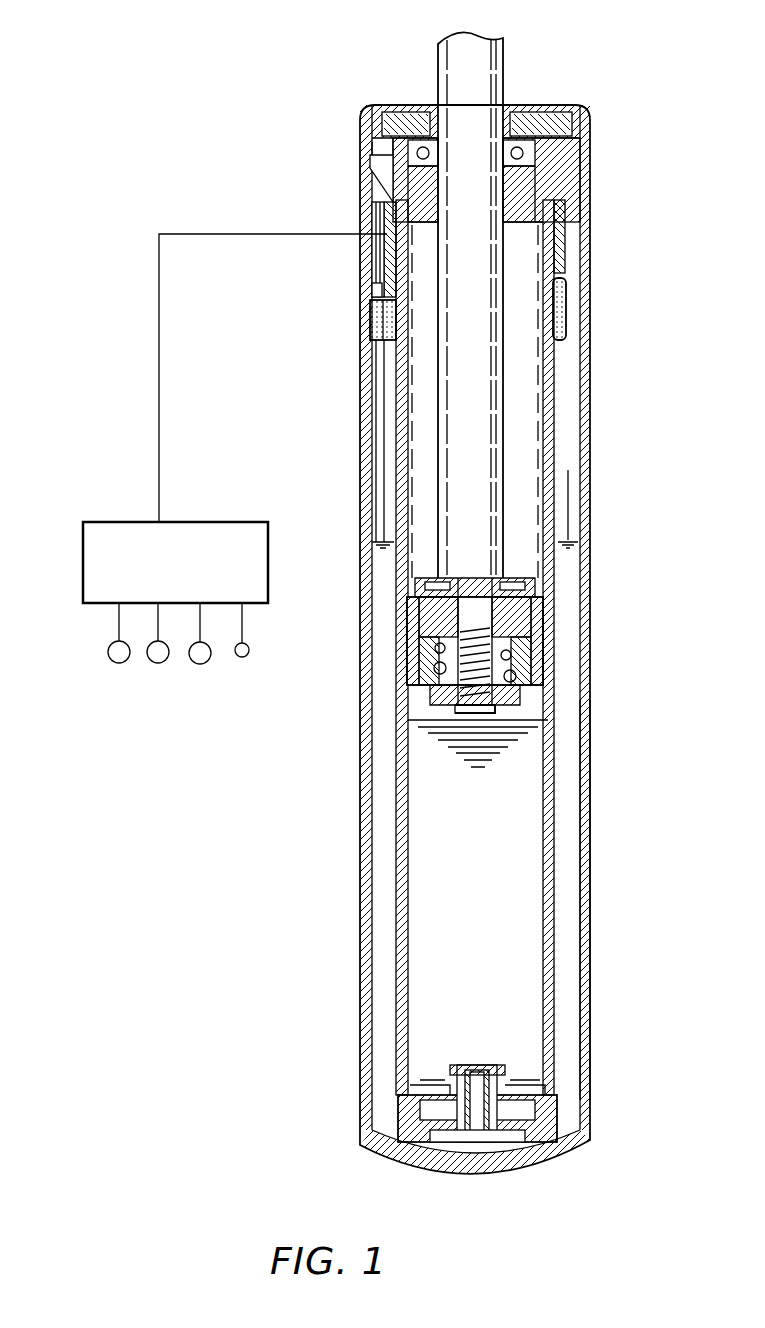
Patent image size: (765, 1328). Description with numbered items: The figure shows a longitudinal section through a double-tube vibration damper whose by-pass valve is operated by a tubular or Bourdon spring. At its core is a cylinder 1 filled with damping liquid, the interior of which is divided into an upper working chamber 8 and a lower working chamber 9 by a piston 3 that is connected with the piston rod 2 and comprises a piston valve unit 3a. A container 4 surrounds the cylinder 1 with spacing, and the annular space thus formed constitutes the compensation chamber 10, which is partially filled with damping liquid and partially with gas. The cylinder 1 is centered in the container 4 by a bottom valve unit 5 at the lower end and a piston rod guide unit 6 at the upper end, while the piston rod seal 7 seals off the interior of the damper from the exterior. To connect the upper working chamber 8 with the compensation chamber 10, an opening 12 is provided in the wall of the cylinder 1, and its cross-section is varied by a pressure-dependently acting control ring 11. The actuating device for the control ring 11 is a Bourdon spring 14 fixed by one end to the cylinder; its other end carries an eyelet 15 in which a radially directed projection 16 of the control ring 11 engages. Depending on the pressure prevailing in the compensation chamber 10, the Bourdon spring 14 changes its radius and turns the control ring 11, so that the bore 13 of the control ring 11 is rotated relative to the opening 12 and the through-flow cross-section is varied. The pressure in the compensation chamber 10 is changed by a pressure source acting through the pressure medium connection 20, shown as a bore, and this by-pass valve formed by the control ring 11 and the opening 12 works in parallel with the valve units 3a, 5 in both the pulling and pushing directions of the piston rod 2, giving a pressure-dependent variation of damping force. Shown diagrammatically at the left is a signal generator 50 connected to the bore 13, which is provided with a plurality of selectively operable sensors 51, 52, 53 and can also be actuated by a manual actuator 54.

The cylinder 1 is at (545, 437).
The piston rod 2 is at (482, 517).
The piston 3 is at (505, 615).
The piston valve unit 3a is at (437, 712).
The container 4 is at (583, 887).
The bottom valve unit 5 is at (545, 1125).
The piston rod guide unit 6 is at (548, 182).
The piston rod seal 7 is at (565, 124).
The upper working chamber 8 is at (523, 383).
The lower working chamber 9 is at (512, 815).
The compensation chamber 10 is at (568, 738).
The control ring 11 is at (557, 230).
The opening 12 is at (385, 238).
The bore 13 is at (385, 232).
The Bourdon spring 14 is at (557, 305).
The eyelet 15 is at (365, 310).
The projection 16 is at (370, 297).
The pressure medium connection 20 is at (362, 165).
The signal generator 50 is at (113, 521).
The sensor 51 is at (114, 662).
The sensor 52 is at (157, 664).
The sensor 53 is at (203, 665).
The manual actuator 54 is at (242, 657).